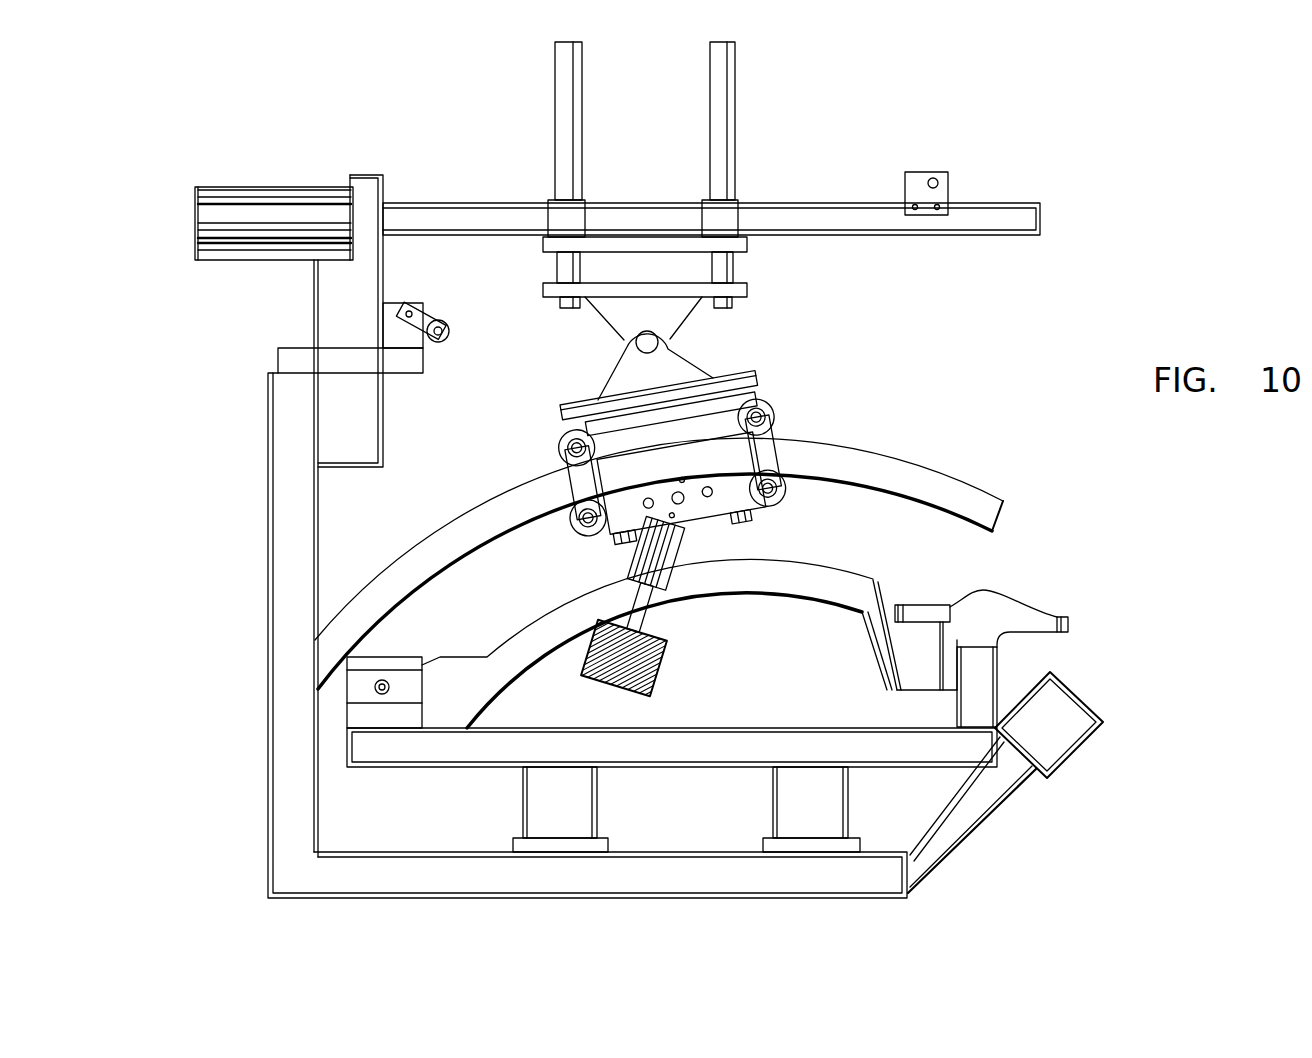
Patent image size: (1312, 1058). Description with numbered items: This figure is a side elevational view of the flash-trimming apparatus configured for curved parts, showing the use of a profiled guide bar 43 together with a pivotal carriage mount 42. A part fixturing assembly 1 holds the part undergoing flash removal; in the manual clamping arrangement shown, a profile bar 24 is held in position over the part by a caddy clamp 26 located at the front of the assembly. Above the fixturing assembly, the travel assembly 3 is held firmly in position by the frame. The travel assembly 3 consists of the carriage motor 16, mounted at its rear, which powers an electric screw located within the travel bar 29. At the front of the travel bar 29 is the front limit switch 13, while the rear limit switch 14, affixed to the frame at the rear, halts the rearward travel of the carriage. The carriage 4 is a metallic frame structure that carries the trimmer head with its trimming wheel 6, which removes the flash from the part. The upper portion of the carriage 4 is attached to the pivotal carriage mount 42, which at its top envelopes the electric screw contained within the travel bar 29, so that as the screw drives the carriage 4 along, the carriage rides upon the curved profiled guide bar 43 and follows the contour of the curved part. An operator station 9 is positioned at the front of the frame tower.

The part fixturing assembly 1 is at (917, 778).
The travel assembly 3 is at (402, 190).
The carriage 4 is at (775, 403).
The trimming wheel 6 is at (650, 670).
The operator station 9 is at (1067, 743).
The front limit switch 13 is at (928, 170).
The rear limit switch 14 is at (441, 345).
The carriage motor 16 is at (245, 190).
The profile bar 24 is at (853, 578).
The caddy clamp 26 is at (1072, 625).
The travel bar 29 is at (1003, 233).
The pivotal carriage mount 42 is at (725, 338).
The profiled guide bar 43 is at (975, 493).